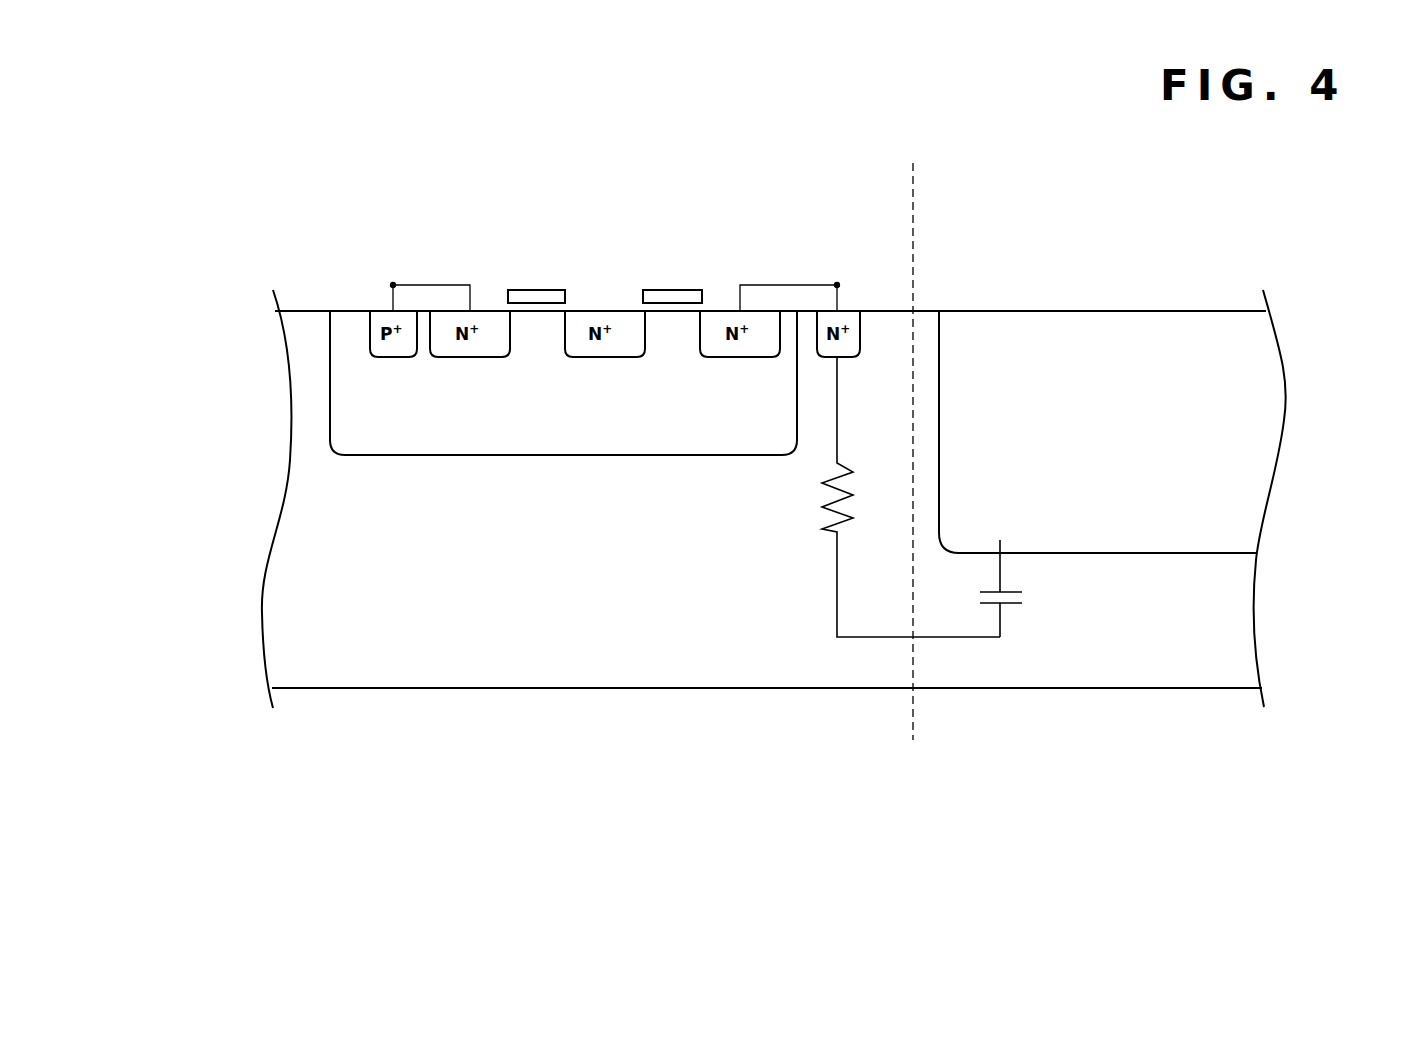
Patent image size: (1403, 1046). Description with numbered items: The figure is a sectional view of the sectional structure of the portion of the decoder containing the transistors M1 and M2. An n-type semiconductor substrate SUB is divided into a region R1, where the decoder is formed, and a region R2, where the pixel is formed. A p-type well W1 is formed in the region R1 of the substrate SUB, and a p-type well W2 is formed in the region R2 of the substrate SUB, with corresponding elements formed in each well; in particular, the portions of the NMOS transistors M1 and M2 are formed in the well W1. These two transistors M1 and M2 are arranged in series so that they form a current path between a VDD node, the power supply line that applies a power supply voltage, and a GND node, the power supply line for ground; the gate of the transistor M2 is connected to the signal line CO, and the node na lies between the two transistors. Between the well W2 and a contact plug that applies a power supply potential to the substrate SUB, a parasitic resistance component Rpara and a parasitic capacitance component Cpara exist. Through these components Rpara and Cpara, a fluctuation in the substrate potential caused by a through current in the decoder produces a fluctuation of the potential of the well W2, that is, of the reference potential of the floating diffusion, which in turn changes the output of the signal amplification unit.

The semiconductor substrate SUB is at (293, 634).
The p-type well W1 is at (328, 387).
The p-type well W2 is at (1303, 311).
The GND node GND is at (393, 285).
The signal line CO is at (537, 290).
The node na is at (605, 311).
The VDD node VDD is at (837, 285).
The parasitic resistance component Rpara is at (885, 497).
The parasitic capacitance component Cpara is at (1018, 590).
The NMOS transistor M1 is at (672, 152).
The NMOS transistor M2 is at (497, 152).
The region R1 is at (910, 772).
The region R2 is at (1265, 772).